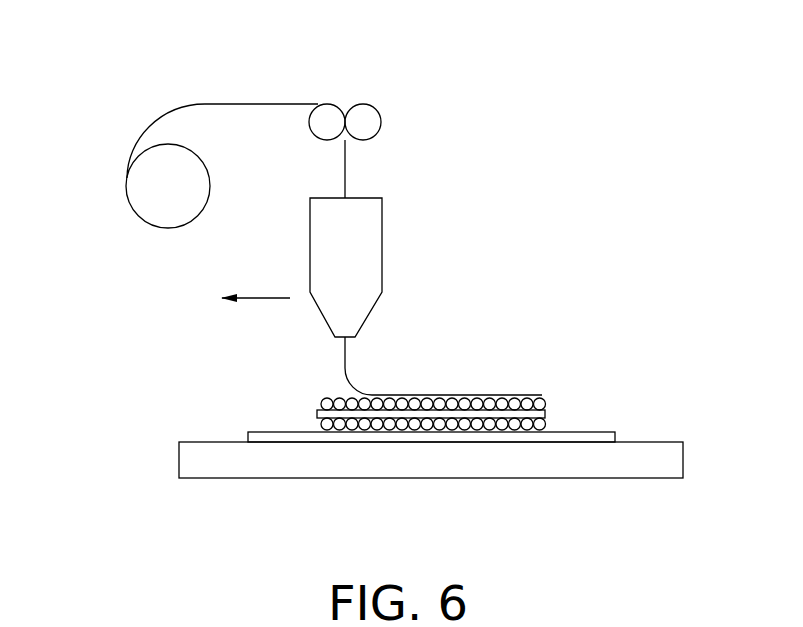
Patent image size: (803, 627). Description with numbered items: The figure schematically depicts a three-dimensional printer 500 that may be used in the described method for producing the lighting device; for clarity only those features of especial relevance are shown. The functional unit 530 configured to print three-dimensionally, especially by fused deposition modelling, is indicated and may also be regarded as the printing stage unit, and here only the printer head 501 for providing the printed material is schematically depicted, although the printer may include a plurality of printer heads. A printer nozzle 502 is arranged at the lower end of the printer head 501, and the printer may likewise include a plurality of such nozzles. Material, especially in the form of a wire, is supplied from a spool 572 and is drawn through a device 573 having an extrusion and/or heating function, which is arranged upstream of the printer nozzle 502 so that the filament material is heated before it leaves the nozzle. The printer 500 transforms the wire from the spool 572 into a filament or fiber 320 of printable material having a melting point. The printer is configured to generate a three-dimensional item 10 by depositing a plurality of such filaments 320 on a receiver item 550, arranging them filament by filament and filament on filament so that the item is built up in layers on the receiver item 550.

The 3D printer 500 is at (637, 207).
The spool 572 is at (130, 130).
The extrusion and/or heating device 573 is at (393, 135).
The printer head 501 is at (397, 210).
The printer nozzle 502 is at (328, 348).
The functional unit 530 is at (150, 267).
The filament 320 is at (348, 367).
The receiver item 550 is at (228, 435).
The 3D item 10 is at (663, 422).